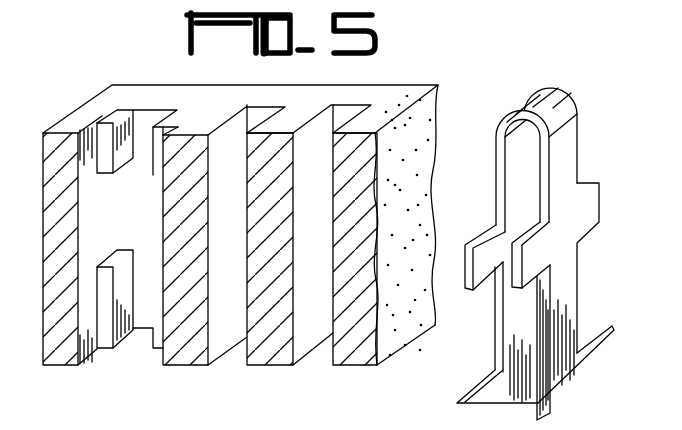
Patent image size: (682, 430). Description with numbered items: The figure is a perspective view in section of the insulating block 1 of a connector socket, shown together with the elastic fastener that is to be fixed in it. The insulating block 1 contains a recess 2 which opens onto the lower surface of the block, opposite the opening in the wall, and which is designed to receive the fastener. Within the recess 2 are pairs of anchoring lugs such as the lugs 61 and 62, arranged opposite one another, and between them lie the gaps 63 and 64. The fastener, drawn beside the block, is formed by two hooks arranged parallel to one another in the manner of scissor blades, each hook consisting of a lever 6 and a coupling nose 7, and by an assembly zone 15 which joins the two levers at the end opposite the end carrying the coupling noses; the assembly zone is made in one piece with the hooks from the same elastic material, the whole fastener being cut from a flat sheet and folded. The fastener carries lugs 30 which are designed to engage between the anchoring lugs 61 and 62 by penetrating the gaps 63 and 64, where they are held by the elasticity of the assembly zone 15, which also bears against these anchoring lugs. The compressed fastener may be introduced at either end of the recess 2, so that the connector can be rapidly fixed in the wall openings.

The insulating block 1 is at (386, 93).
The recess 2 is at (143, 110).
The anchoring lug 61 is at (120, 298).
The anchoring lug 62 is at (170, 272).
The gap 63 is at (163, 181).
The gap 64 is at (163, 261).
The assembly zone 15 is at (566, 95).
The lug 30 is at (493, 237).
The lever 6 is at (568, 292).
The coupling nose 7 is at (493, 378).